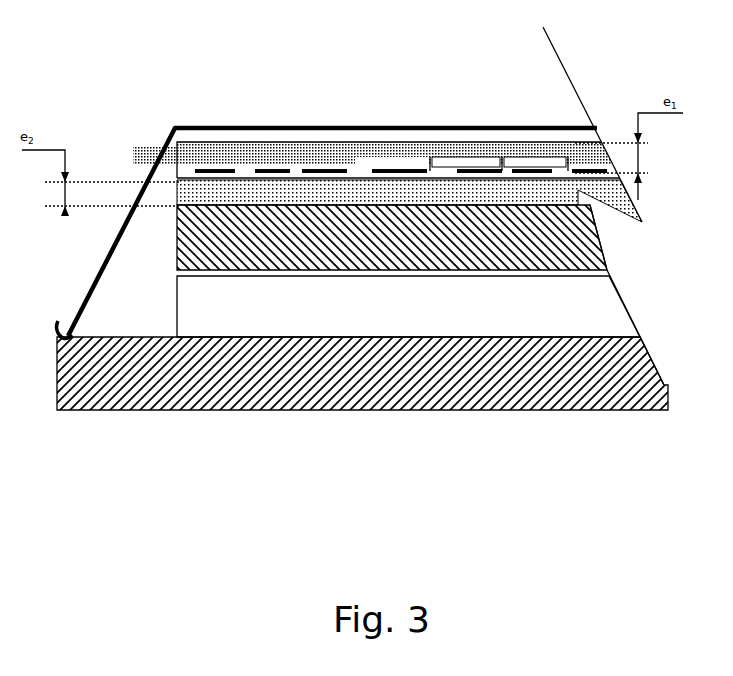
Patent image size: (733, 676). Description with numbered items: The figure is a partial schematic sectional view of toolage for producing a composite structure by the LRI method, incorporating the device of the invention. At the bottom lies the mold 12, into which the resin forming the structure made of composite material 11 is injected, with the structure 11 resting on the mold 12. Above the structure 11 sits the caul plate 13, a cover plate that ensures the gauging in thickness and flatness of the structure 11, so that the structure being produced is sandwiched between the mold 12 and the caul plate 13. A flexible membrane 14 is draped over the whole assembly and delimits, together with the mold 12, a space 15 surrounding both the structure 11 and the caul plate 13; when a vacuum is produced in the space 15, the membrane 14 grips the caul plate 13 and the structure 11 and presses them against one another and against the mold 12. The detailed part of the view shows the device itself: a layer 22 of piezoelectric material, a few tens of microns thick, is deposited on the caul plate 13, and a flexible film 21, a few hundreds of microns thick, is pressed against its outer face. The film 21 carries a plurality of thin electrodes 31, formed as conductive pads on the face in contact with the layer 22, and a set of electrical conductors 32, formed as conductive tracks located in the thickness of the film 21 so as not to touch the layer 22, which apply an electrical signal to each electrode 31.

The structure made of composite material 11 is at (408, 407).
The mold 12 is at (362, 412).
The caul plate 13 is at (431, 295).
The membrane 14 is at (355, 181).
The space 15 is at (104, 304).
The film 21 is at (373, 111).
The layer of piezoelectric material 22 is at (409, 133).
The electrodes 31 is at (406, 110).
The electrical conductors 32 is at (499, 124).